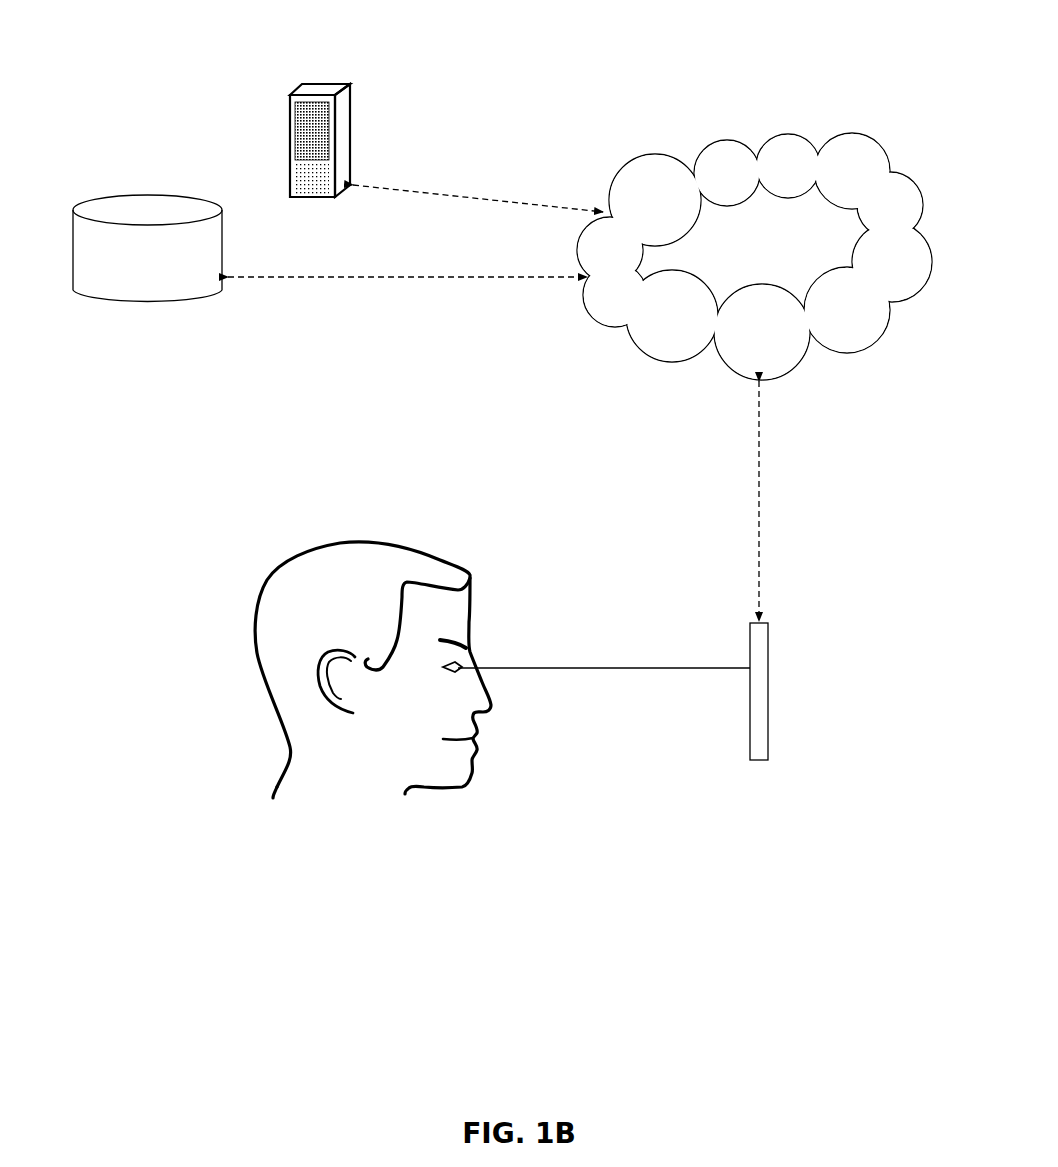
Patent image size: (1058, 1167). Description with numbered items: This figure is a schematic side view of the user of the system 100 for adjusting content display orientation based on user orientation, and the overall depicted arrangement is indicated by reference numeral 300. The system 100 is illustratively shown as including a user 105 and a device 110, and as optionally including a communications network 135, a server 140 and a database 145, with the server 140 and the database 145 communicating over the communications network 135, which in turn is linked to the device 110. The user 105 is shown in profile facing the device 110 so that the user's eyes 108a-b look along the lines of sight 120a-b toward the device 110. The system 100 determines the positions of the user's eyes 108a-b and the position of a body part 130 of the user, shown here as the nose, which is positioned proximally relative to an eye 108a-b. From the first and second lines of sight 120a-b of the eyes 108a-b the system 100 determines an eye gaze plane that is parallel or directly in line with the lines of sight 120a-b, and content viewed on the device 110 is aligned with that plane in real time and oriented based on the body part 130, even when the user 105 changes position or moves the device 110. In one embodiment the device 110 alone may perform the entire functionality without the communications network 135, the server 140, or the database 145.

The environment 300 is at (697, 68).
The system 100 is at (501, 982).
The user 105 is at (425, 789).
The eyes 108a-b is at (448, 669).
The device 110 is at (759, 760).
The lines of sight 120a-b is at (576, 668).
The body part 130 is at (484, 707).
The communications network 135 is at (754, 190).
The server 140 is at (308, 197).
The database 145 is at (147, 302).